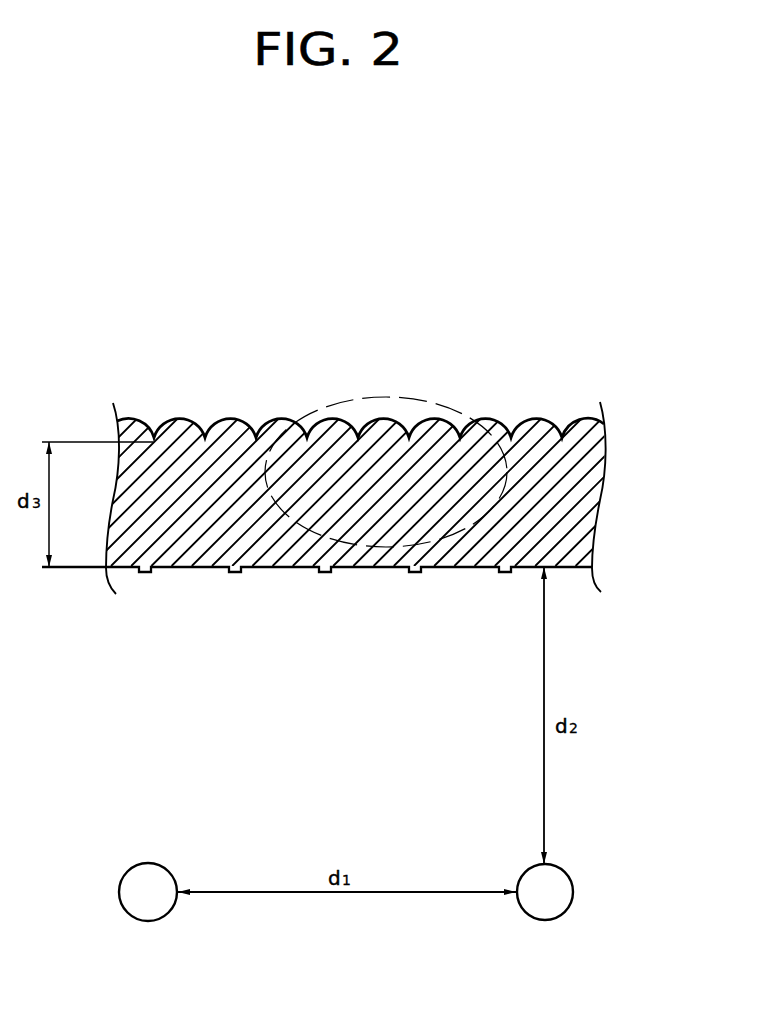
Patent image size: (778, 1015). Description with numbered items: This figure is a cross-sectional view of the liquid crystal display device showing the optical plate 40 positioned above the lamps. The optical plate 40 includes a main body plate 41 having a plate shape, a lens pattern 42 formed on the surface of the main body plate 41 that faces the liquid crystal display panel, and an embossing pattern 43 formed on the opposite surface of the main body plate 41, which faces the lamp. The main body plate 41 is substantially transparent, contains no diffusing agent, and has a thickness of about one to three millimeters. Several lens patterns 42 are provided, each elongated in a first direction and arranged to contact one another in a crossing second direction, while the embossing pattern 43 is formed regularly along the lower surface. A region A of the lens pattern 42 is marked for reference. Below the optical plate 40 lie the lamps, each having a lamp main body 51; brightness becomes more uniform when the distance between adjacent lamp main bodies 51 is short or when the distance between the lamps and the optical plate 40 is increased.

The optical plate 40 is at (389, 480).
The main body plate 41 is at (597, 490).
The lens pattern 42 is at (535, 418).
The embossing pattern 43 is at (232, 573).
The lamp main body 51 is at (545, 921).
The region A is at (386, 397).